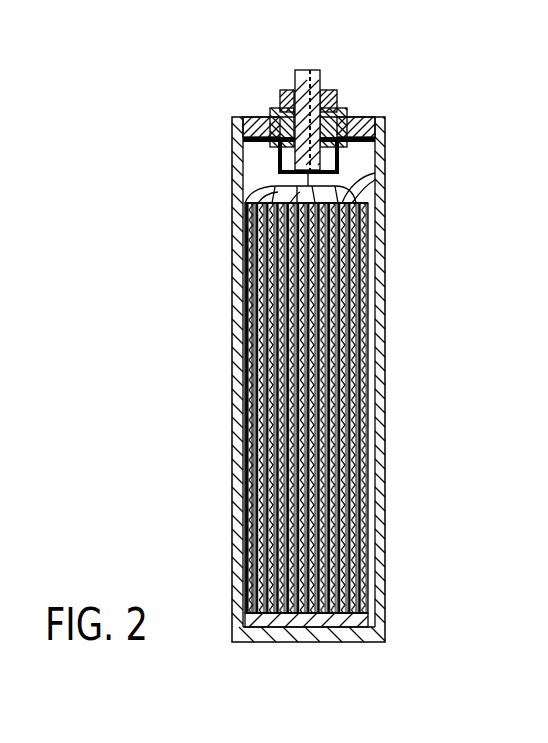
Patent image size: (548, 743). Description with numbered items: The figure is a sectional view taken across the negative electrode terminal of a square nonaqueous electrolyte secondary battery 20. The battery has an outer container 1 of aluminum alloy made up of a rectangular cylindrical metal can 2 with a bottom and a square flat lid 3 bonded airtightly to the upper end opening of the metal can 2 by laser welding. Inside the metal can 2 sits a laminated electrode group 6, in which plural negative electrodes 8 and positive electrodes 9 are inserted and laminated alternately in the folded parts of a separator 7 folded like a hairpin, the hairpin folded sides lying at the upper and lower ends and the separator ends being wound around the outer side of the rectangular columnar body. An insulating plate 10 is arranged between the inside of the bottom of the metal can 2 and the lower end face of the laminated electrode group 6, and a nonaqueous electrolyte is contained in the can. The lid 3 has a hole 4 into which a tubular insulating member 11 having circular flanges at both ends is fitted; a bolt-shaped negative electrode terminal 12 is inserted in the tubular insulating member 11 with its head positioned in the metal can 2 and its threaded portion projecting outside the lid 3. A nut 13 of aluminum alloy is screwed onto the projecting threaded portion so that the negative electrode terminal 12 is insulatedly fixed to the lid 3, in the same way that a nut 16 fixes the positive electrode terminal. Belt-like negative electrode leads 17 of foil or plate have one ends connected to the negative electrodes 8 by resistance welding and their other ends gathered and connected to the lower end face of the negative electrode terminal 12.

The square nonaqueous electrolyte secondary battery 20 is at (447, 67).
The outer container 1 is at (352, 138).
The metal can 2 is at (338, 155).
The lid 3 is at (386, 119).
The hole 4 is at (339, 100).
The laminated electrode group 6 is at (380, 193).
The separator 7 is at (245, 232).
The negative electrode 8 is at (250, 262).
The positive electrode 9 is at (250, 294).
The insulating plate 10 is at (382, 628).
The tubular insulating member 11 is at (284, 111).
The negative electrode terminal 12 is at (303, 72).
The nut 13 is at (320, 92).
The nut 16 is at (366, 176).
The negative electrode lead 17 is at (245, 193).